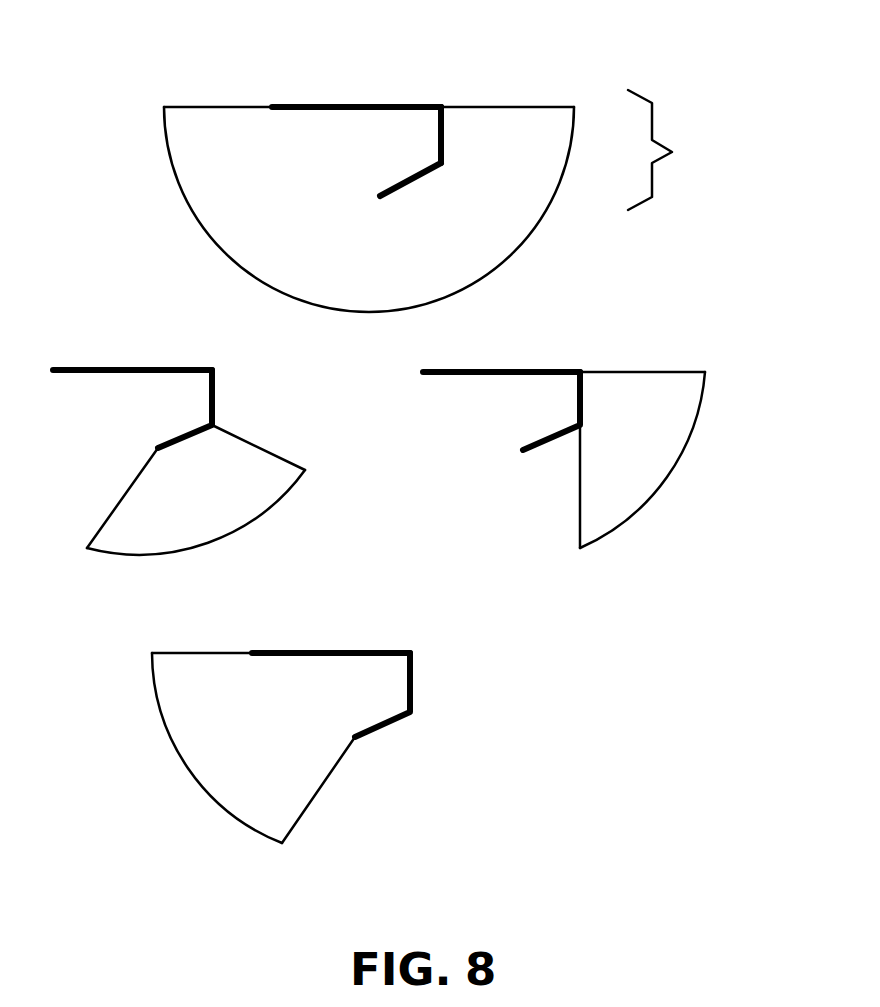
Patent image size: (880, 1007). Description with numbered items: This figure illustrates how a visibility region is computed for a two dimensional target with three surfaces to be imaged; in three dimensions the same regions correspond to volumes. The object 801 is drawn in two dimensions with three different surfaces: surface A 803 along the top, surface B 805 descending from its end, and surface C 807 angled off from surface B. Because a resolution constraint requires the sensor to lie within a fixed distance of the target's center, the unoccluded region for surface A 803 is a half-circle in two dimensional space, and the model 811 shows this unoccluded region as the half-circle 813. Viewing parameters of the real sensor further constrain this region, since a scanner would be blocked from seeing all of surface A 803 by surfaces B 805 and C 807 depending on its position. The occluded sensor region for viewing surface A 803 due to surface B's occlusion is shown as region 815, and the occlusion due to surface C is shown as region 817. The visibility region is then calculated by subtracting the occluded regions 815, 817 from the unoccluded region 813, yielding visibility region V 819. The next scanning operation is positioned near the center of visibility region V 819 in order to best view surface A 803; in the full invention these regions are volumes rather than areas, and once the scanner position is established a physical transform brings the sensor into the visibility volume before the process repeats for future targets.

The object 801 is at (441, 107).
The surface A 803 is at (325, 107).
The surface B 805 is at (443, 153).
The surface C 807 is at (395, 190).
The model 811 is at (393, 159).
The half-circle 813 is at (190, 163).
The region 815 is at (663, 453).
The region 817 is at (130, 538).
The visibility region V 819 is at (208, 769).